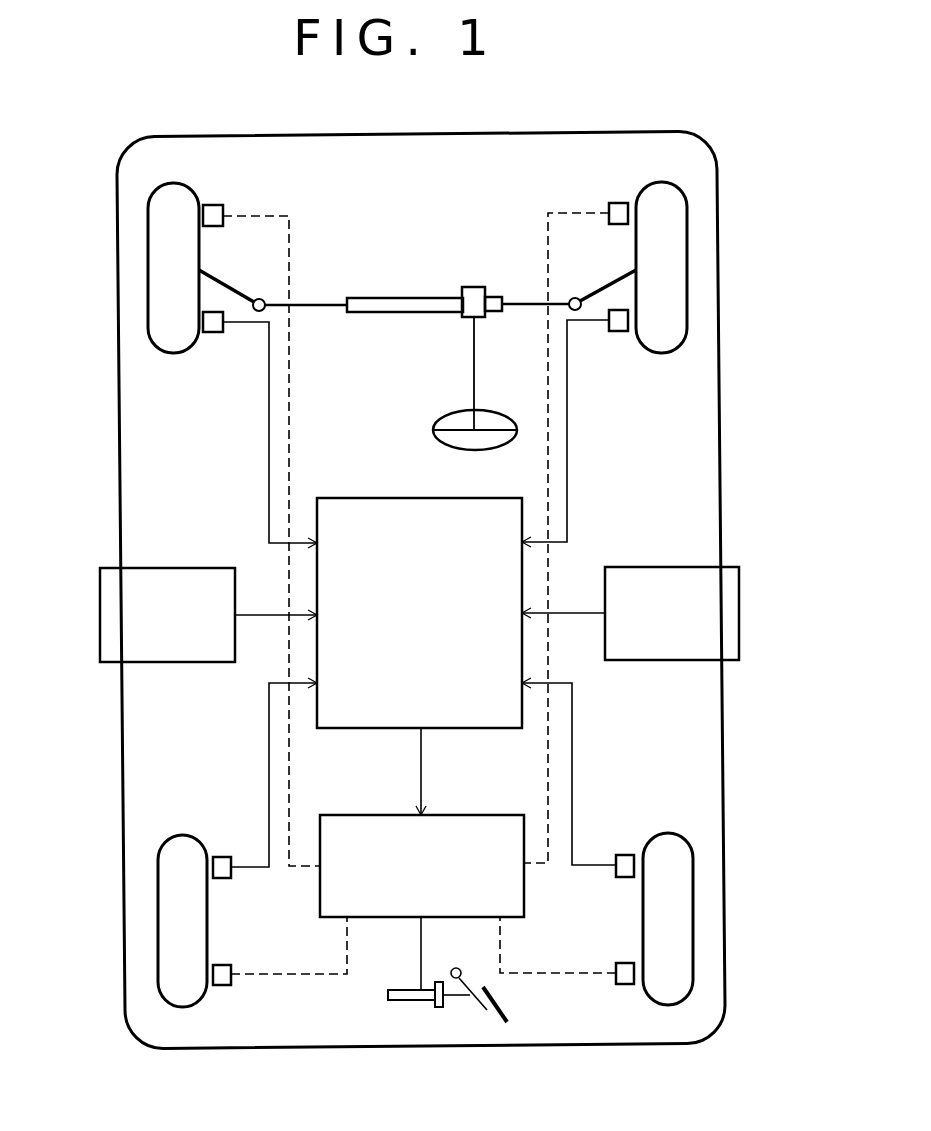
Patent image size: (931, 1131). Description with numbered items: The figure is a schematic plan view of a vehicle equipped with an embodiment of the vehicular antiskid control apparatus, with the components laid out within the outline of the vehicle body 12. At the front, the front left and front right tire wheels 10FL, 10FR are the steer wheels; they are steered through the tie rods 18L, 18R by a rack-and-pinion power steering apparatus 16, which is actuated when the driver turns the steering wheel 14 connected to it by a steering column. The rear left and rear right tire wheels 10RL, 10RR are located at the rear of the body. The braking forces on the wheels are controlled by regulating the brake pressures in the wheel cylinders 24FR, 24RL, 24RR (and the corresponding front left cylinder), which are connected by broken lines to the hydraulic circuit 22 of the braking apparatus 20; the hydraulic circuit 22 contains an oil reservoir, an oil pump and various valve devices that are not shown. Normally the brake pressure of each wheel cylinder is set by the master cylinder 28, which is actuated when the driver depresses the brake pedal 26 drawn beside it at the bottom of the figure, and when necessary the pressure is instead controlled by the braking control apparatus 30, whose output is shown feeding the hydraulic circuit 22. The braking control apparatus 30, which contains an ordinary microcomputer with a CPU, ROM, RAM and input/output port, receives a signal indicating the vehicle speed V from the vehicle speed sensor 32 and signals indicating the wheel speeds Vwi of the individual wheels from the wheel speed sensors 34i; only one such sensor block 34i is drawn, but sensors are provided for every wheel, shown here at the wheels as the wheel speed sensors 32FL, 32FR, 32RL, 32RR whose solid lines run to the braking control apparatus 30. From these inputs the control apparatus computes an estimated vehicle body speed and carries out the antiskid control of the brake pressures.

The front left tire wheel 10FL is at (148, 255).
The front right tire wheel 10FR is at (687, 252).
The rear left tire wheel 10RL is at (158, 920).
The rear right tire wheel 10RR is at (693, 935).
The vehicle body 12 is at (719, 410).
The steering wheel 14 is at (488, 447).
The rack-and-pinion power steering apparatus 16 is at (468, 275).
The tie rod 18L is at (258, 258).
The tie rod 18R is at (607, 280).
The braking apparatus 20 is at (414, 981).
The hydraulic circuit 22 is at (440, 903).
The wheel cylinder 24FR is at (237, 182).
The wheel cylinder 24RL is at (225, 964).
The wheel cylinder 24RR is at (618, 963).
The brake pedal 26 is at (508, 1011).
The master cylinder 28 is at (400, 1000).
The braking control apparatus 30 is at (436, 662).
The vehicle speed sensor 32 is at (167, 567).
The wheel speed sensor 32FL is at (213, 333).
The wheel speed sensor 32FR is at (618, 331).
The wheel speed sensor 32RL is at (221, 856).
The wheel speed sensor 32RR is at (627, 855).
The wheel speed sensor 34i is at (672, 566).